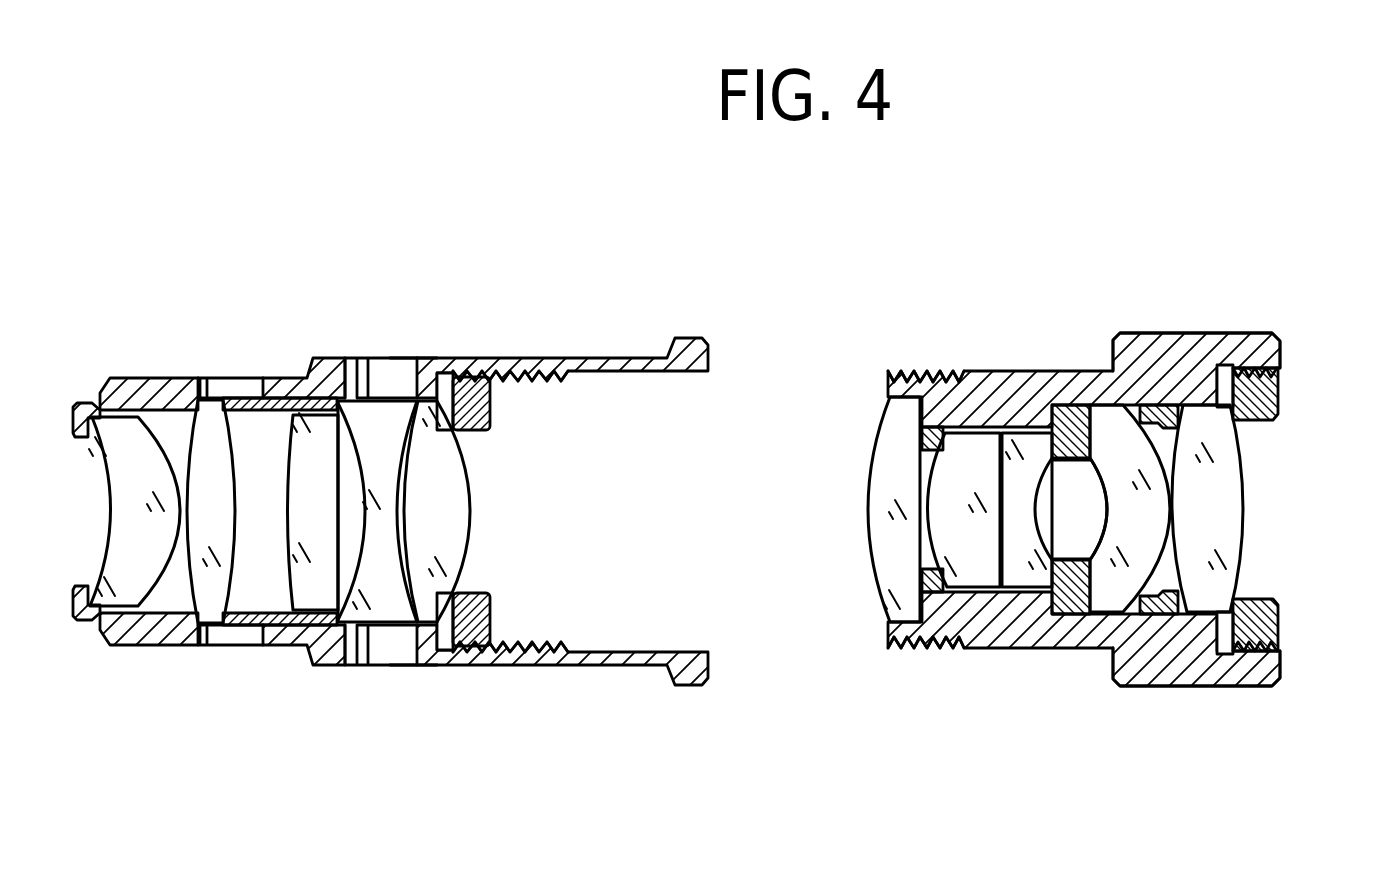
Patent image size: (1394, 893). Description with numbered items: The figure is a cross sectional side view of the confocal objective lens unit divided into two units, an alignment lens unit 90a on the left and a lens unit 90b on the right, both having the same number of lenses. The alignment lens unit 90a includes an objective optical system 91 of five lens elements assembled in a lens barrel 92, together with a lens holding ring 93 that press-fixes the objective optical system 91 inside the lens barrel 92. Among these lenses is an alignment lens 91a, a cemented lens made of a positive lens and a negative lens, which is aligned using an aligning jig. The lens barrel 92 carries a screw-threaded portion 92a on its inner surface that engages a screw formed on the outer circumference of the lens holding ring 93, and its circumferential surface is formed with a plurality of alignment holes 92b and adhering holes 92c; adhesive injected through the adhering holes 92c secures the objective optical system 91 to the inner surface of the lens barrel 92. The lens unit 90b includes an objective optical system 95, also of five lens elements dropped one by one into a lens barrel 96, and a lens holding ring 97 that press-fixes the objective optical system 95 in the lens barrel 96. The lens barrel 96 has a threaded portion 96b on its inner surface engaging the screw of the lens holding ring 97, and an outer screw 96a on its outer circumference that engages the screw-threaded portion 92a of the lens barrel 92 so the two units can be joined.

The alignment lens unit 90a is at (508, 697).
The lens unit 90b is at (1127, 729).
The objective optical system 91 is at (453, 627).
The alignment lens 91a is at (338, 397).
The lens barrel 92 is at (140, 390).
The screw-threaded portion 92a is at (523, 380).
The alignment holes 92b is at (407, 362).
The adhering holes 92c is at (247, 387).
The lens holding ring 93 is at (483, 617).
The objective optical system 95 is at (875, 615).
The lens barrel 96 is at (1180, 342).
The outer screw 96a is at (938, 330).
The threaded portion 96b is at (1277, 378).
The lens holding ring 97 is at (1262, 407).